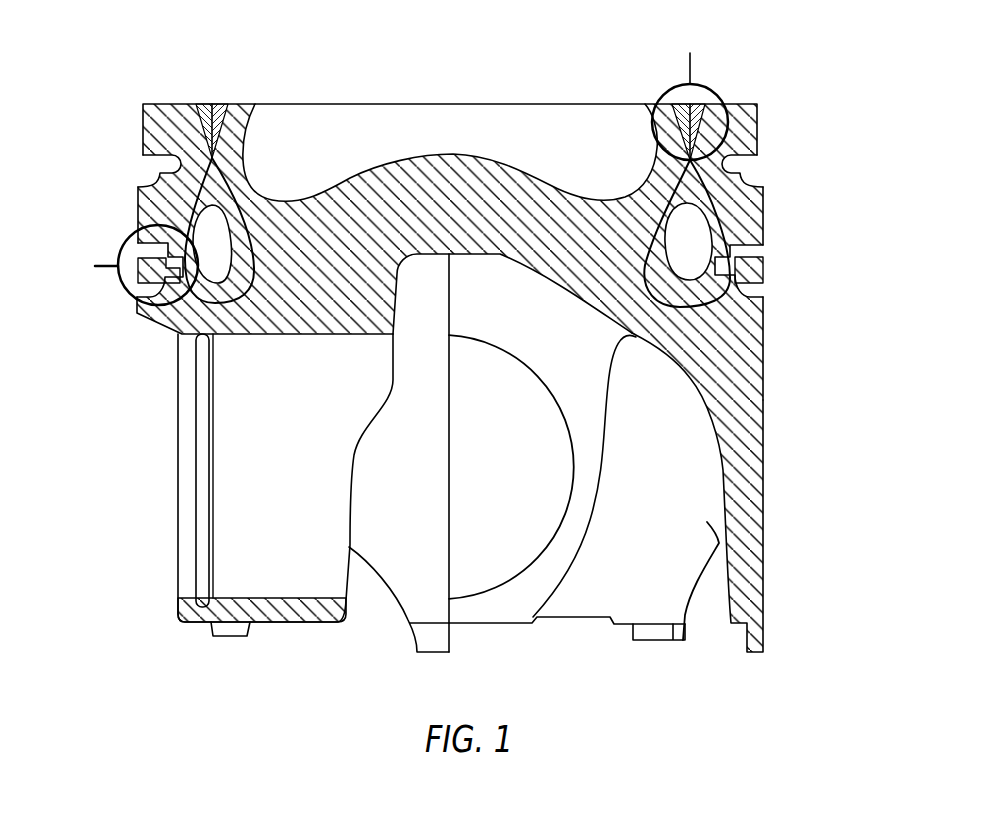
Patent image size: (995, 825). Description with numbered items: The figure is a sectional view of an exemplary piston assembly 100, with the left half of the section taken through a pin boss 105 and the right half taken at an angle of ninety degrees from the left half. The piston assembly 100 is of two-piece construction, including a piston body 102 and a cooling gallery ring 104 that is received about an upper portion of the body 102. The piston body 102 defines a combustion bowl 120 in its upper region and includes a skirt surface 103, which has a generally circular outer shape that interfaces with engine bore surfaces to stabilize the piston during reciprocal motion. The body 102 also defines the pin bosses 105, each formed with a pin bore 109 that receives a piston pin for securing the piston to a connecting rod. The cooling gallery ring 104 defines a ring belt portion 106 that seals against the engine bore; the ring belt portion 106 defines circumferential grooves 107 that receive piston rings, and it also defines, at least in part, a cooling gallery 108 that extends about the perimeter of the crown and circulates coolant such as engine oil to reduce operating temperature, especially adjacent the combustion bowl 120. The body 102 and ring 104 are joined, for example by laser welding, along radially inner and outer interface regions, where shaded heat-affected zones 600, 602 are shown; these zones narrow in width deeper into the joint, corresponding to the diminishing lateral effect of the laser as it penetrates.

The piston assembly 100 is at (78, 102).
The piston body 102 is at (740, 342).
The skirt surface 103 is at (755, 462).
The cooling gallery ring 104 is at (155, 128).
The pin boss 105 is at (193, 613).
The ring belt portion 106 is at (765, 142).
The circumferential grooves 107 is at (733, 252).
The cooling gallery 108 is at (205, 225).
The pin bore 109 is at (527, 553).
The combustion bowl 120 is at (370, 170).
The heat-affected zone 600 is at (213, 140).
The heat-affected zone 602 is at (137, 277).